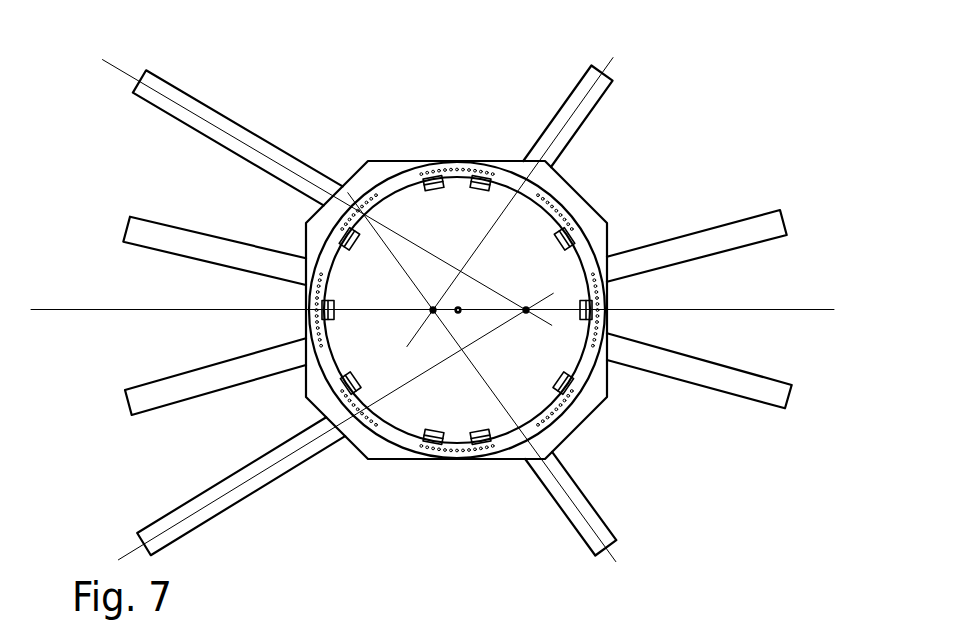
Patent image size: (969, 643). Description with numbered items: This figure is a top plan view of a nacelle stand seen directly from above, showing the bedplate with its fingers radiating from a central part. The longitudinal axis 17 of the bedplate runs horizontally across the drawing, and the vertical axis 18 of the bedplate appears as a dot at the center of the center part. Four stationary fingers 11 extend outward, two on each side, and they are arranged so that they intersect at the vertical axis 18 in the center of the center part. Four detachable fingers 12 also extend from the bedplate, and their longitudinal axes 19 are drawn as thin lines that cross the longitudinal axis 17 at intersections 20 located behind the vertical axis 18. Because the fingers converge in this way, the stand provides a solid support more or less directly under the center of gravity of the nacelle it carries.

The stationary fingers 11 is at (145, 230).
The detachable fingers 12 is at (213, 115).
The longitudinal axis 17 is at (765, 311).
The vertical axis 18 is at (458, 310).
The longitudinal axes 19 is at (128, 71).
The intersections 20 is at (433, 310).